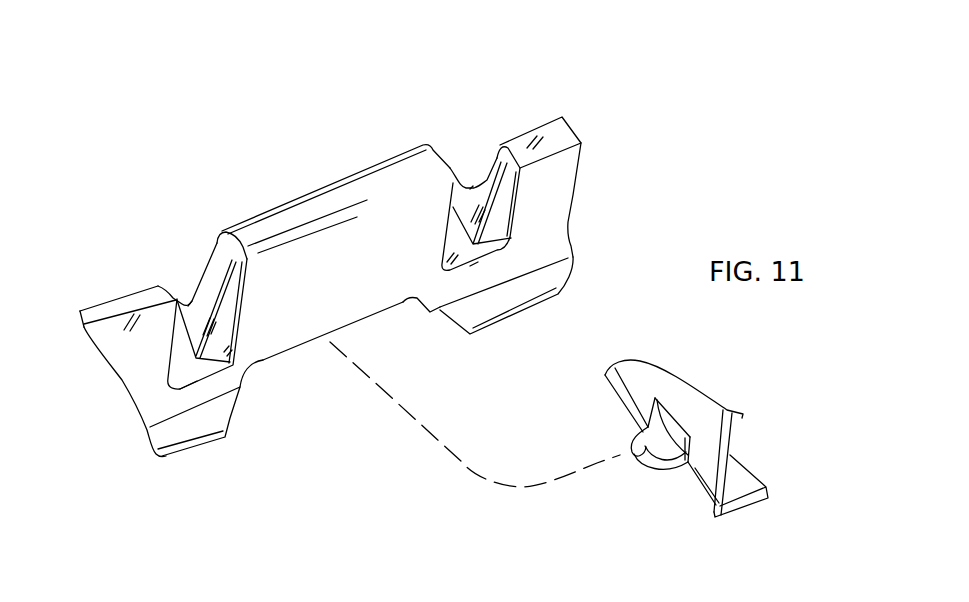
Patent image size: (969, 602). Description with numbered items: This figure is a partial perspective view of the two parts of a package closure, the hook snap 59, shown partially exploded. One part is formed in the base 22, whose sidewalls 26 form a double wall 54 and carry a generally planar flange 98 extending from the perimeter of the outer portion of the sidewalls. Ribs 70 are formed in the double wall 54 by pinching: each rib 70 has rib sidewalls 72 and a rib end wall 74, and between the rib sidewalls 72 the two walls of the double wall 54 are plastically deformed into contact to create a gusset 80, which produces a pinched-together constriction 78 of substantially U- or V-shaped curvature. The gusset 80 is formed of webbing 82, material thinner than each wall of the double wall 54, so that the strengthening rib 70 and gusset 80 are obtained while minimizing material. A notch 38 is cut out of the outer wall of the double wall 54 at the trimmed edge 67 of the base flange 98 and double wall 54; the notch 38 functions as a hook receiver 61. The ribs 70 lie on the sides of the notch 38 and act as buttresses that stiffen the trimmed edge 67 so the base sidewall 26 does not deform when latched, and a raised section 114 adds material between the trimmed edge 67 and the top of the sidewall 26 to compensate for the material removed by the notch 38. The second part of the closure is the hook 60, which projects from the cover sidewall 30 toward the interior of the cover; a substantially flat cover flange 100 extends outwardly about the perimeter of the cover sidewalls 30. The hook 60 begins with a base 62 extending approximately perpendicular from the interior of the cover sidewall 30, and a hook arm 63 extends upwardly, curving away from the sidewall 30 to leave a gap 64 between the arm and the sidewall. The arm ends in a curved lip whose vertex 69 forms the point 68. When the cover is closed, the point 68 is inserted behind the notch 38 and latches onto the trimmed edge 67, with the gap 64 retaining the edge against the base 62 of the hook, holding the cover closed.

The hook snap 59 is at (672, 90).
The base 22 is at (570, 165).
The sidewalls 26 is at (557, 133).
The cover sidewalls 30 is at (687, 400).
The notch 38 is at (319, 352).
The double wall 54 is at (313, 208).
The hook 60 is at (654, 512).
The hook receiver 61 is at (265, 360).
The base of the hook 62 is at (673, 470).
The hook arm 63 is at (650, 466).
The gap 64 is at (643, 431).
The trimmed edge 67 is at (413, 307).
The point 68 is at (634, 438).
The vertex 69 is at (628, 446).
The ribs 70 is at (165, 275).
The rib sidewalls 72 is at (244, 282).
The rib end wall 74 is at (197, 377).
The constriction 78 is at (204, 340).
The gusset 80 is at (203, 290).
The webbing 82 is at (210, 282).
The flange 98 is at (192, 425).
The cover flange 100 is at (745, 483).
The raised section 114 is at (268, 228).